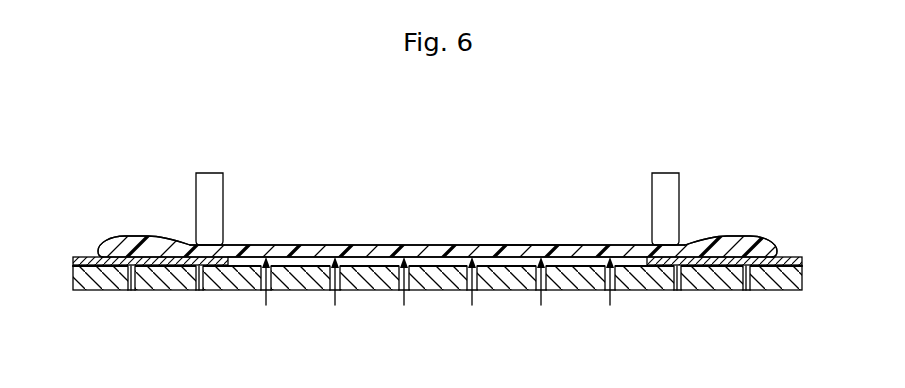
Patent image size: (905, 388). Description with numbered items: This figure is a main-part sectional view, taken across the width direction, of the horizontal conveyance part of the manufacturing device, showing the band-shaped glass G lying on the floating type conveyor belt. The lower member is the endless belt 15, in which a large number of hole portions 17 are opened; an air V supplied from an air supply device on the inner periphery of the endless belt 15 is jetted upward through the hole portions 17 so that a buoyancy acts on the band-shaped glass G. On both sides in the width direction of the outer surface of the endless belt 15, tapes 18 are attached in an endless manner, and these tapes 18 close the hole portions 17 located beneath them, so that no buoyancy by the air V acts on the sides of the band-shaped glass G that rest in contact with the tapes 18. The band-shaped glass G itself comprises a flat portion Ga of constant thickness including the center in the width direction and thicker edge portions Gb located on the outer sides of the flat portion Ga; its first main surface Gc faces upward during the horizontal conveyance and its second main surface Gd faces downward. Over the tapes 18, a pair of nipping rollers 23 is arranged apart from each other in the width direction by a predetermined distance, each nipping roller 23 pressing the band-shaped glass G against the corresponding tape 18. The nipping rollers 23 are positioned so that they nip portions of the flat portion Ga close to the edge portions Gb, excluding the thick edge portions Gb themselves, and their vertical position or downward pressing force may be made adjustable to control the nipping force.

The endless belt 15 is at (715, 286).
The hole portions 17 is at (606, 291).
The air V is at (405, 298).
The tapes 18 is at (132, 260).
The band-shaped glass G is at (373, 246).
The flat portion Ga is at (455, 253).
The first main surface Gc is at (528, 246).
The second main surface Gd is at (520, 259).
The edge portions Gb is at (147, 240).
The nipping rollers 23 is at (208, 183).